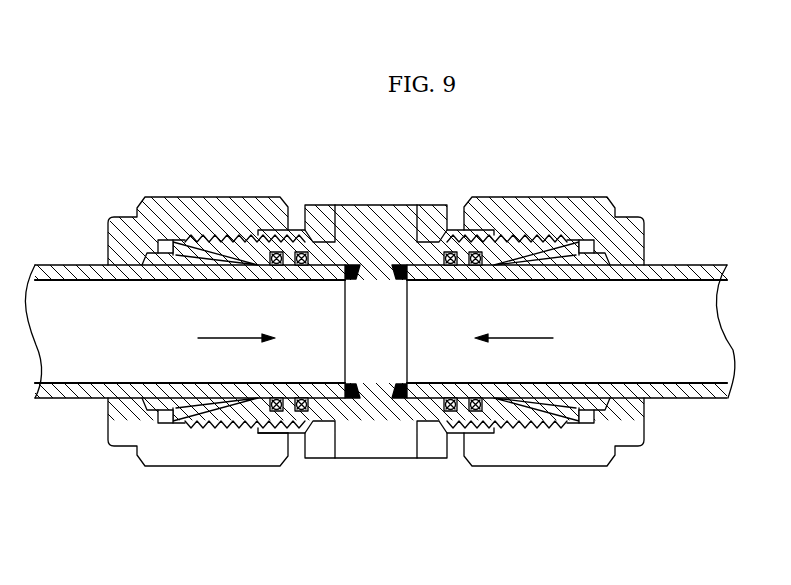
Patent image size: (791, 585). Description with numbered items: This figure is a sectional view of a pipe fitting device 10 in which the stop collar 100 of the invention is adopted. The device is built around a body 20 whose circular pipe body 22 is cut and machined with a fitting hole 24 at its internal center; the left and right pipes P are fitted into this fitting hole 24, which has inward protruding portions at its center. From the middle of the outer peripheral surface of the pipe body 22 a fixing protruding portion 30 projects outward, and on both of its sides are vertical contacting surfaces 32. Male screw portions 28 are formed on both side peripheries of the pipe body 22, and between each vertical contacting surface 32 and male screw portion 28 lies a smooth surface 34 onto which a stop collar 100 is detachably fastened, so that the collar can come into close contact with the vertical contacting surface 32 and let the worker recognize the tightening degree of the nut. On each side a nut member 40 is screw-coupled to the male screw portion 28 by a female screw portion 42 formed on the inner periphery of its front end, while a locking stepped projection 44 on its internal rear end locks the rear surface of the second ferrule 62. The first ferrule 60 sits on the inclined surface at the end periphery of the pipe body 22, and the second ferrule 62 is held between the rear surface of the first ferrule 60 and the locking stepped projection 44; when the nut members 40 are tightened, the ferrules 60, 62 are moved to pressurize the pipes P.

The pipe fitting device 10 is at (636, 190).
The body 20 is at (368, 196).
The pipe body 22 is at (263, 248).
The fitting hole 24 is at (266, 436).
The male screw portion 28 is at (495, 240).
The fixing protruding portion 30 is at (383, 444).
The vertical contacting surface 32 is at (444, 444).
The smooth surface 34 is at (317, 240).
The nut member 40 is at (146, 470).
The female screw portion 42 is at (540, 238).
The locking stepped projection 44 is at (588, 402).
The first ferrule 60 is at (201, 247).
The second ferrule 62 is at (154, 238).
The stop collar 100 is at (306, 455).
The pipe P is at (681, 400).